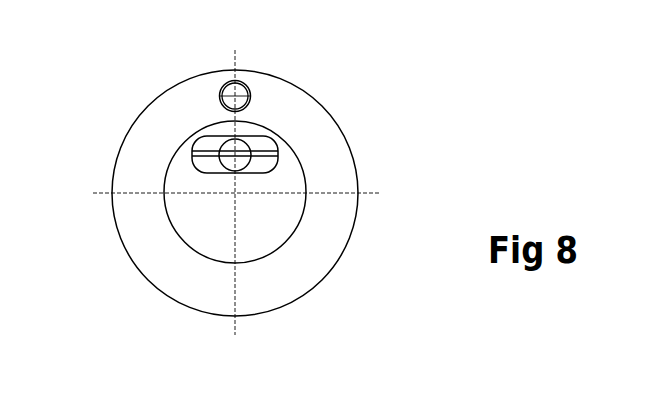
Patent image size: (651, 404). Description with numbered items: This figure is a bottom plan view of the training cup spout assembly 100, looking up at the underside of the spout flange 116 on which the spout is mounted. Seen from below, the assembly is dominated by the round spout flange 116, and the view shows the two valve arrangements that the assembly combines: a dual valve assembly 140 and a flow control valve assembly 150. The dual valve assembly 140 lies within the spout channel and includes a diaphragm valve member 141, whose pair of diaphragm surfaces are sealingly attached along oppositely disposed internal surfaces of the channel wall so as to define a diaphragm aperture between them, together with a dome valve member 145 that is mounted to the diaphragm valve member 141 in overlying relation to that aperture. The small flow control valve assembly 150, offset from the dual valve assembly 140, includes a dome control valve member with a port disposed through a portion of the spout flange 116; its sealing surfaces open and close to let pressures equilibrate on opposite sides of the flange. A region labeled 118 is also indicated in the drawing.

The training cup spout assembly 100 is at (357, 105).
The spout flange 116 is at (177, 300).
The inner wall 118 is at (332, 170).
The flow control valve assembly 150 is at (207, 90).
The dual valve assembly 140 is at (194, 182).
The diaphragm valve member 141 is at (260, 173).
The dome valve member 145 is at (242, 140).